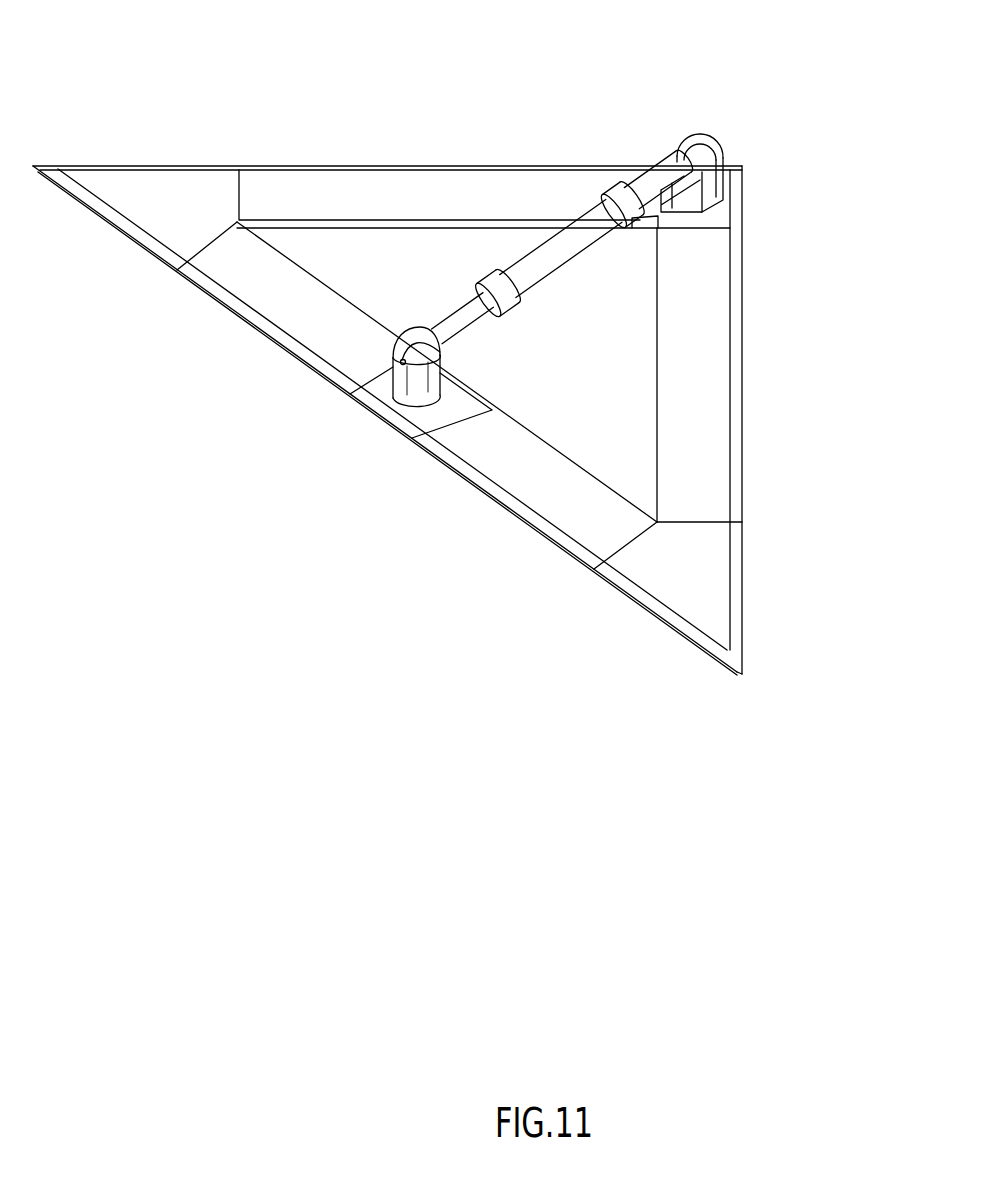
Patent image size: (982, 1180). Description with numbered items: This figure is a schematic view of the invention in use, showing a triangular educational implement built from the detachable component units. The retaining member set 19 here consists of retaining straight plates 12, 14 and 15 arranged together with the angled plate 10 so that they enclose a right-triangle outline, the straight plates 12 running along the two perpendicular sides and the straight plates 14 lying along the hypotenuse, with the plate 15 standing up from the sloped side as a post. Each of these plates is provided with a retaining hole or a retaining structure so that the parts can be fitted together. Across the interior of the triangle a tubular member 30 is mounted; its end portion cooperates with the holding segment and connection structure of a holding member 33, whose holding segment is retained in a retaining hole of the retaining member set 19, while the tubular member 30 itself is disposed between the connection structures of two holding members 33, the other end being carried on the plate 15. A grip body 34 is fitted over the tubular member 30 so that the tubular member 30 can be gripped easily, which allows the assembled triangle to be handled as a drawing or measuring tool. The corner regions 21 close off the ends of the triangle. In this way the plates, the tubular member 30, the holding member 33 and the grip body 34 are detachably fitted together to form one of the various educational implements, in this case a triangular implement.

The angled plate 10 is at (720, 210).
The retaining straight plate 12 is at (415, 188).
The retaining straight plate 14 is at (290, 303).
The retaining straight plate 15 is at (390, 410).
The retaining member set 19 is at (415, 510).
The corner gusset 21 is at (150, 208).
The tubular member 30 is at (462, 325).
The holding member 33 is at (700, 138).
The grip body 34 is at (573, 252).